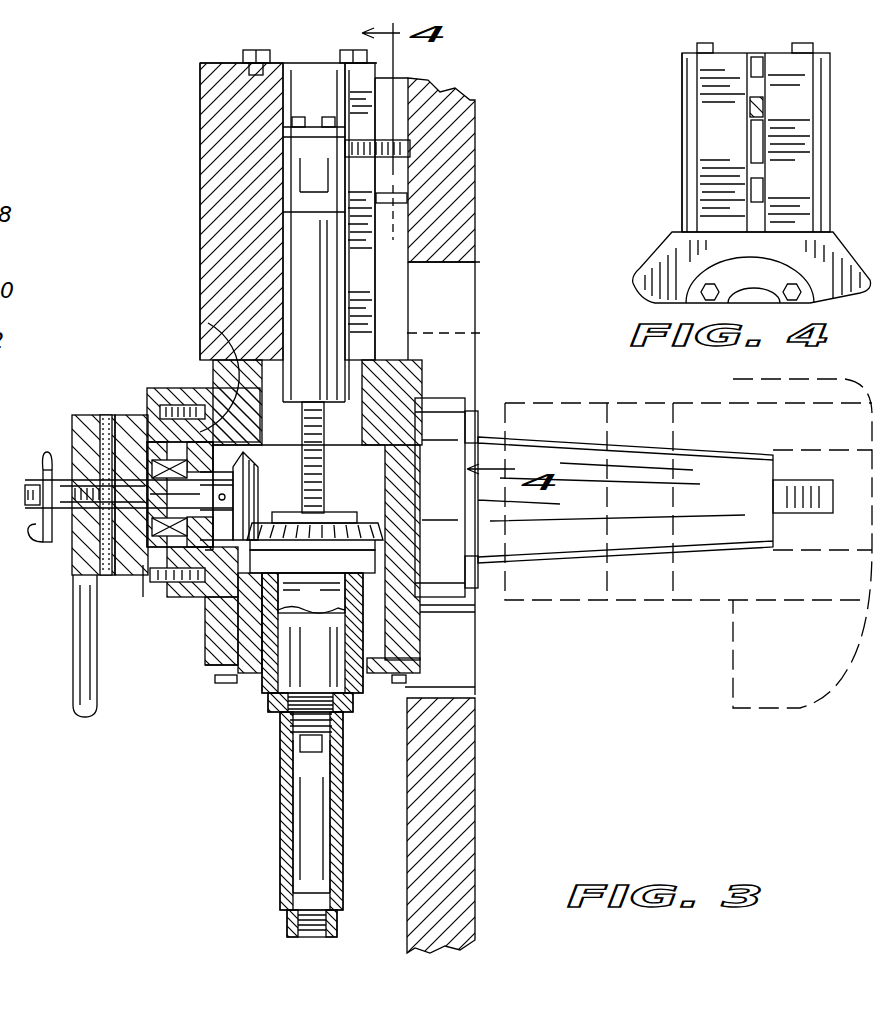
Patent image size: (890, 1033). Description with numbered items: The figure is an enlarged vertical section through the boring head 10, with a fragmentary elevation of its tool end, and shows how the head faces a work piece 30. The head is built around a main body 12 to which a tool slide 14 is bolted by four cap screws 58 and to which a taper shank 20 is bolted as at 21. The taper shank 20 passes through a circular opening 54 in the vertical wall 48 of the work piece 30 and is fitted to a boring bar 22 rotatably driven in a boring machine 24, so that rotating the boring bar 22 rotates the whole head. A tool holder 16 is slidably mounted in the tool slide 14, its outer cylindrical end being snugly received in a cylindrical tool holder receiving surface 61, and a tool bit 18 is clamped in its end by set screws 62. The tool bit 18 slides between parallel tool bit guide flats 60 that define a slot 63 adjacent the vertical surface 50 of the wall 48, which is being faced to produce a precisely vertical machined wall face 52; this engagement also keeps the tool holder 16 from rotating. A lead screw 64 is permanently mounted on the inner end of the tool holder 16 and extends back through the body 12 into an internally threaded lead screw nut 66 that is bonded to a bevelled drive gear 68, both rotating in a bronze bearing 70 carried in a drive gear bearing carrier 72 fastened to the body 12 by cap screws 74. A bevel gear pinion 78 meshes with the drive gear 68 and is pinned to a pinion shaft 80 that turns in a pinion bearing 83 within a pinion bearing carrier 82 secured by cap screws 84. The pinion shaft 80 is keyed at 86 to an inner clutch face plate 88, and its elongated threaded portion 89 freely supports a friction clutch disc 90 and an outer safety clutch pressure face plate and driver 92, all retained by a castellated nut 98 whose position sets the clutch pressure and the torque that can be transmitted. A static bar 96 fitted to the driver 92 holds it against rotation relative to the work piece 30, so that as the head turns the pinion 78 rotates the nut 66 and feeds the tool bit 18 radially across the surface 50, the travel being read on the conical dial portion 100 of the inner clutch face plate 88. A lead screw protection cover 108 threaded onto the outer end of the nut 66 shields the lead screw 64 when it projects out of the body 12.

In FIG. 3, the boring head 10 is at (190, 238).
In FIG. 4, the boring head 10 is at (676, 178).
In FIG. 3, the main body 12 is at (215, 382).
In FIG. 4, the main body 12 is at (665, 258).
In FIG. 3, the tool slide 14 is at (200, 102).
In FIG. 3, the tool holder 16 is at (288, 232).
In FIG. 4, the tool holder 16 is at (760, 148).
In FIG. 3, the tool bit 18 is at (412, 150).
In FIG. 4, the tool bit 18 is at (767, 110).
In FIG. 3, the taper shank 20 is at (560, 439).
In FIG. 4, the taper shank 20 is at (758, 290).
In FIG. 3, the bolts 21 is at (478, 415).
In FIG. 4, the bolts 21 is at (715, 290).
In FIG. 3, the boring bar 22 is at (582, 600).
In FIG. 3, the boring machine 24 is at (795, 707).
In FIG. 3, the work piece 30 is at (470, 95).
In FIG. 3, the vertical wall 48 is at (475, 782).
In FIG. 3, the vertical surface 50 is at (470, 99).
In FIG. 3, the machined wall face 52 is at (398, 226).
In FIG. 3, the circular opening 54 is at (450, 268).
In FIG. 3, the cap screws 58 is at (352, 50).
In FIG. 4, the cap screws 58 is at (798, 43).
In FIG. 3, the tool bit guide flats 60 is at (398, 80).
In FIG. 4, the tool bit guide flats 60 is at (760, 213).
In FIG. 3, the tool holder receiving surface 61 is at (250, 74).
In FIG. 4, the tool holder receiving surface 61 is at (763, 73).
In FIG. 3, the set screws 62 is at (330, 116).
In FIG. 3, the slot 63 is at (378, 200).
In FIG. 4, the slot 63 is at (758, 192).
In FIG. 3, the lead screw 64 is at (320, 492).
In FIG. 3, the lead screw nut 66 is at (288, 712).
In FIG. 3, the bevelled drive gear 68 is at (382, 528).
In FIG. 3, the bronze bushing or bearing 70 is at (248, 625).
In FIG. 3, the drive gear bearing carrier 72 is at (367, 640).
In FIG. 3, the cap screws 74 is at (225, 684).
In FIG. 3, the bevel gear pinion 78 is at (263, 494).
In FIG. 3, the pinion shaft 80 is at (250, 493).
In FIG. 3, the pinion bearing carrier 82 is at (208, 322).
In FIG. 3, the pinion bearing 83 is at (153, 456).
In FIG. 3, the cap screws 84 is at (170, 392).
In FIG. 3, the key 86 is at (72, 545).
In FIG. 3, the inner clutch face plate 88 is at (127, 568).
In FIG. 3, the elongated threaded portion 89 is at (31, 483).
In FIG. 3, the friction clutch disc 90 is at (106, 413).
In FIG. 3, the outer safety clutch pressure face plate and driver 92 is at (86, 560).
In FIG. 3, the static bar 96 is at (88, 719).
In FIG. 3, the castellated nut 98 is at (54, 456).
In FIG. 3, the conical dial portion 100 is at (130, 566).
In FIG. 3, the lead screw protection cover 108 is at (280, 876).